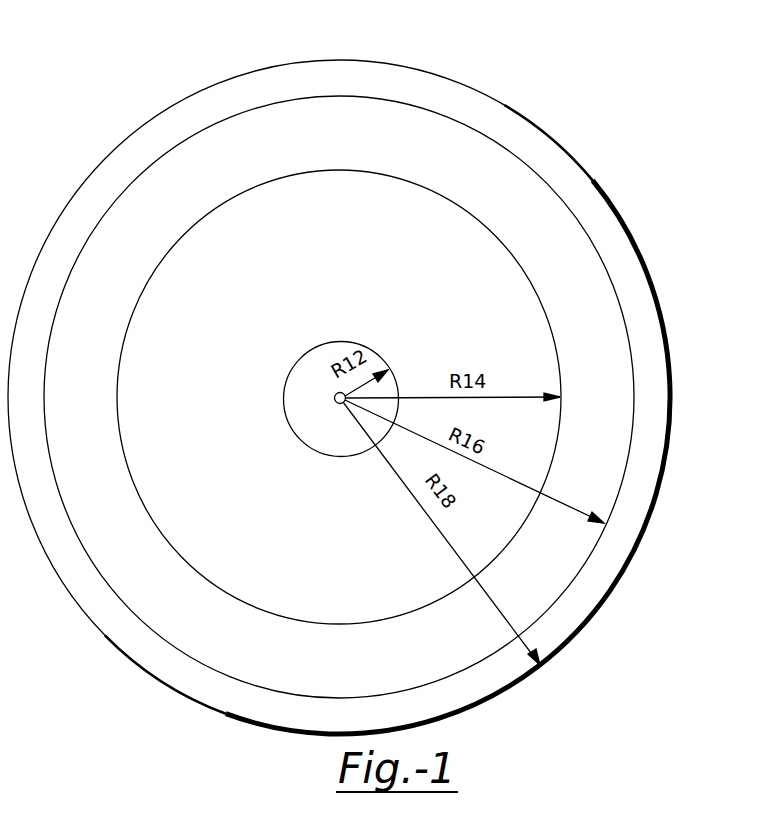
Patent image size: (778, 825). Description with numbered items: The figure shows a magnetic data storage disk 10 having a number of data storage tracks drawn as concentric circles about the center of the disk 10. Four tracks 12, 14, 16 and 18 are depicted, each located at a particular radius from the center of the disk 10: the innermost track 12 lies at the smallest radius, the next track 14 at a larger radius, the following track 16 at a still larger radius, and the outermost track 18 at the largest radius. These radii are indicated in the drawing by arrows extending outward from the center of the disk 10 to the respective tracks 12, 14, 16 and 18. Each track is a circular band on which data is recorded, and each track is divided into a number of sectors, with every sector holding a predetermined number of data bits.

The data storage disk 10 is at (568, 132).
The track 12 is at (290, 373).
The track 14 is at (160, 260).
The track 16 is at (162, 155).
The track 18 is at (233, 73).